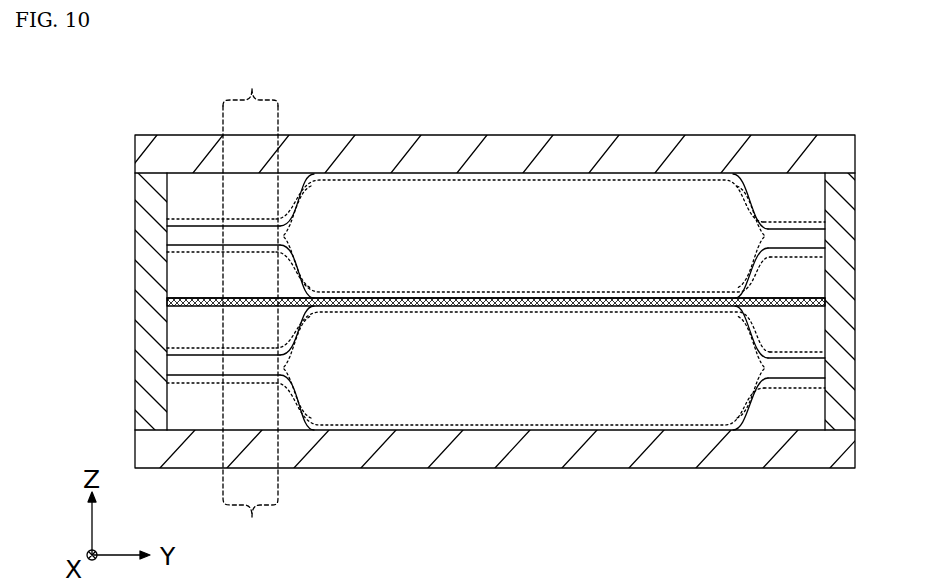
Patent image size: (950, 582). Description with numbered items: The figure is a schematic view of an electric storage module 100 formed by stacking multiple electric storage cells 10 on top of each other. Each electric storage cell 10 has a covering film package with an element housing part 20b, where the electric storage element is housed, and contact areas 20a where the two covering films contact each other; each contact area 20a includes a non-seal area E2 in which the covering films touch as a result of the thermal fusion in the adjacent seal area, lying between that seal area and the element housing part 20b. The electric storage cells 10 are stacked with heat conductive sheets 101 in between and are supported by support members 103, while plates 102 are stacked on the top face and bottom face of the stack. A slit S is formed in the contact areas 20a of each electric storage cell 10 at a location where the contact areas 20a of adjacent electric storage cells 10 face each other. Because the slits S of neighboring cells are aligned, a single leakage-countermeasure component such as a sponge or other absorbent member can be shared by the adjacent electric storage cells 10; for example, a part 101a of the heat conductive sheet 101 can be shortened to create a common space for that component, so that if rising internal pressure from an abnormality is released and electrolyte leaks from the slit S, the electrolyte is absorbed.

The electric storage module 100 is at (810, 121).
The heat conductive sheet 101 is at (855, 302).
The part of the heat conductive sheet 101a is at (197, 300).
The plate 102 is at (590, 155).
The support member 103 is at (147, 372).
The electric storage cell 10 is at (362, 217).
The contact area 20a is at (163, 173).
The element housing part 20b is at (517, 292).
The slit S is at (253, 241).
The non-seal area E2 is at (250, 304).